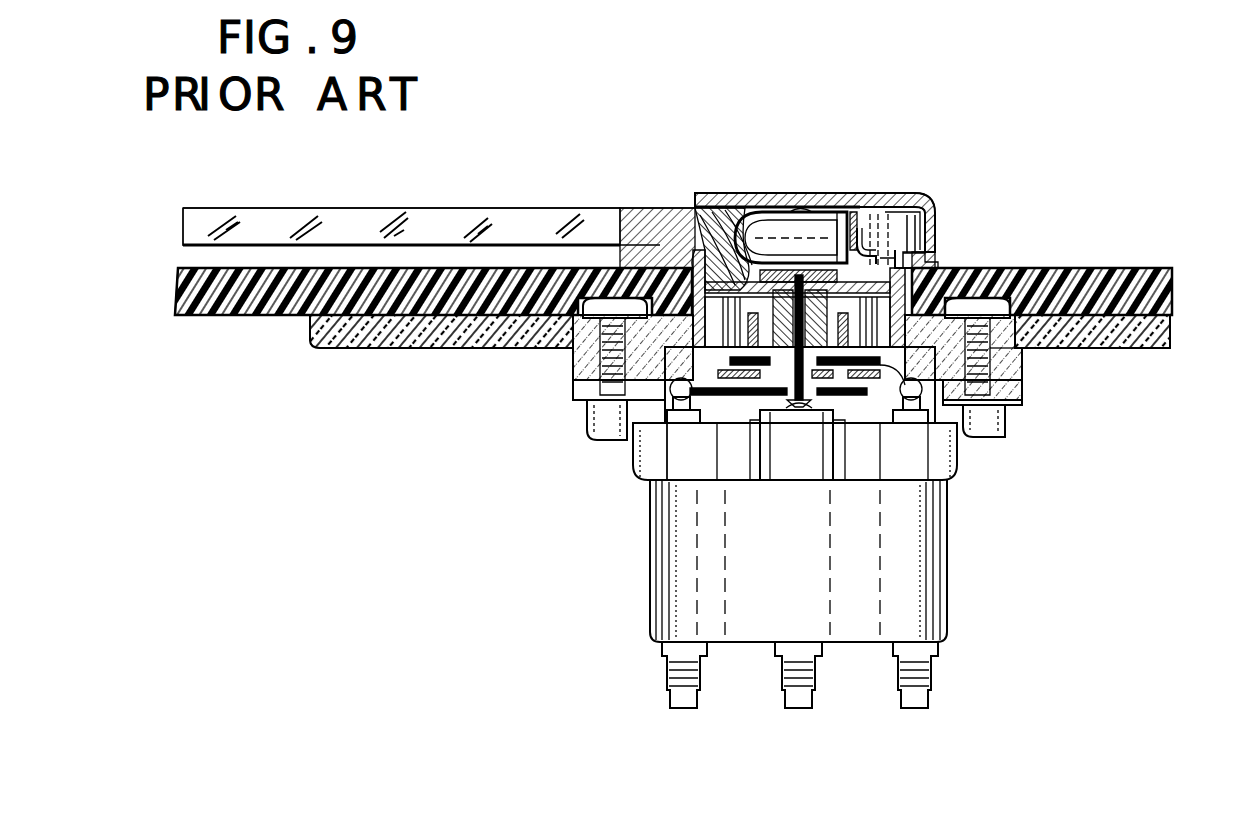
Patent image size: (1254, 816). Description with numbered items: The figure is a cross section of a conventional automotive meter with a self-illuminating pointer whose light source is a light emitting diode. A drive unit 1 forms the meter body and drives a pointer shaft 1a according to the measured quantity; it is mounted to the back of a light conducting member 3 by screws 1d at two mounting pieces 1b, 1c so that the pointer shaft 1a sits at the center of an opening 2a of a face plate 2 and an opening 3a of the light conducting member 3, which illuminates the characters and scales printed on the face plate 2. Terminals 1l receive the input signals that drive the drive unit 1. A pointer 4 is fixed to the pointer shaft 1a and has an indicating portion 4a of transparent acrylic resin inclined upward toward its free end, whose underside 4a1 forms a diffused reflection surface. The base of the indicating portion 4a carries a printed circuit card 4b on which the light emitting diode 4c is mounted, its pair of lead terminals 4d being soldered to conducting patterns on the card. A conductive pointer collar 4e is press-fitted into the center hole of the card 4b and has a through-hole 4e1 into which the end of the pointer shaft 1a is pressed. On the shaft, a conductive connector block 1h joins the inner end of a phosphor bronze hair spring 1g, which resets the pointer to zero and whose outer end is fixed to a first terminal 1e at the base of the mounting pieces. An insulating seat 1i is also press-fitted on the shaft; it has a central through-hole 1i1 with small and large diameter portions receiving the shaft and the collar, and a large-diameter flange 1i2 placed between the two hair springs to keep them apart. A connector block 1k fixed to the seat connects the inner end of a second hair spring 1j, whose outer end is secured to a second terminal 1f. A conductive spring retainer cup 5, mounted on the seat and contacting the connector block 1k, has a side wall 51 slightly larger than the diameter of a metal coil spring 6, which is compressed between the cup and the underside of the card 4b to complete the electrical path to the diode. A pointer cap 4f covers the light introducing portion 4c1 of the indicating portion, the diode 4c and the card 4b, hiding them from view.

The drive unit 1 is at (940, 602).
The pointer shaft 1a is at (650, 540).
The mounting piece 1b is at (573, 390).
The mounting piece 1c is at (1015, 390).
The screw 1d is at (590, 437).
The first terminal 1e is at (637, 462).
The second terminal 1f is at (958, 432).
The hair spring 1g is at (900, 396).
The connector block 1h is at (858, 422).
The insulating seat 1i is at (943, 402).
The through-hole 1i1 is at (907, 248).
The large-diameter flange 1i2 is at (1005, 370).
The hair spring 1j is at (1000, 268).
The connector block 1k is at (650, 480).
The terminals 1l is at (697, 700).
The face plate 2 is at (1172, 290).
The opening 2a is at (452, 350).
The light conducting member 3 is at (1172, 336).
The opening 3a is at (530, 352).
The pointer 4 is at (606, 210).
The indicating portion 4a is at (533, 210).
The underside 4a1 is at (183, 246).
The printed circuit card 4b is at (722, 200).
The light emitting diode 4c is at (832, 222).
The light introducing portion 4c1 is at (748, 205).
The lead terminals 4d is at (900, 224).
The pointer collar 4e is at (866, 236).
The through-hole 4e1 is at (780, 232).
The pointer cap 4f is at (802, 214).
The spring retainer cup 5 is at (933, 265).
The side wall 51 is at (690, 222).
The coil spring 6 is at (712, 215).